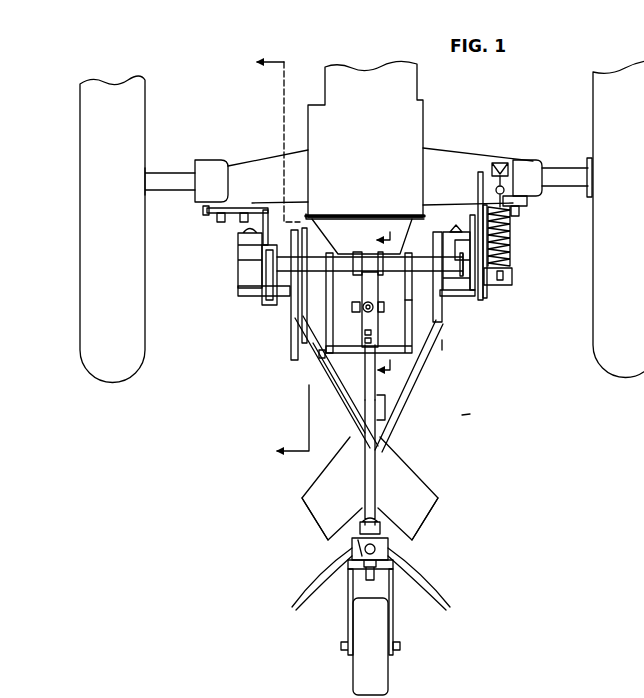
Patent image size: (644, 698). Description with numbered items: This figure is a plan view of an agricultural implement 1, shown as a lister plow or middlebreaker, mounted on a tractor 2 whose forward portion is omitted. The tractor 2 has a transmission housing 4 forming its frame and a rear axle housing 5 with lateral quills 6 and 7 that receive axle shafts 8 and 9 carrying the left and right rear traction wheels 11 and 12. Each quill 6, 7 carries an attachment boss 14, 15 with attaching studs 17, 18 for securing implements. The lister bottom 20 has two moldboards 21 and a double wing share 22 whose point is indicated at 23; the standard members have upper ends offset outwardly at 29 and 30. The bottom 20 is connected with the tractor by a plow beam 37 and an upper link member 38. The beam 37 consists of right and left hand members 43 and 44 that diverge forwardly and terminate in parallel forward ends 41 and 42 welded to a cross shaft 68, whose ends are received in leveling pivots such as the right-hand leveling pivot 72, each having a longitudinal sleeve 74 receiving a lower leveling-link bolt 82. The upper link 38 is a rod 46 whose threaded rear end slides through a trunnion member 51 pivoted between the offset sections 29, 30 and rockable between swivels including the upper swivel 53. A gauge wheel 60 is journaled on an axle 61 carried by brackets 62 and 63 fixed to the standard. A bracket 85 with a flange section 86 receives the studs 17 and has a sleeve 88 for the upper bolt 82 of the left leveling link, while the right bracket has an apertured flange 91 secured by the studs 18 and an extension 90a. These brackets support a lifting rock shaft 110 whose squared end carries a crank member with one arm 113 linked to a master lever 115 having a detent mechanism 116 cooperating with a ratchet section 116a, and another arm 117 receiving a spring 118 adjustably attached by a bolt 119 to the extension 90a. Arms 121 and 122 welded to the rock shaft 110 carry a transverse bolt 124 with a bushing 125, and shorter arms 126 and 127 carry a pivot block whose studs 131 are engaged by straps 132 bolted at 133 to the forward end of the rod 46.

The implement 1 is at (463, 415).
The tractor 2 is at (420, 92).
The transmission housing 4 is at (360, 52).
The rear axle housing 5 is at (408, 146).
The quill 6 is at (250, 166).
The quill 7 is at (448, 165).
The axle shaft 8 is at (170, 180).
The axle shaft 9 is at (562, 175).
The rear traction wheel 11 is at (128, 95).
The rear traction wheel 12 is at (600, 91).
The attachment boss 14 is at (228, 165).
The attachment boss 15 is at (514, 180).
The attaching studs 17 is at (243, 223).
The attaching studs 18 is at (518, 214).
The lister bottom 20 is at (422, 470).
The moldboards 21 is at (412, 541).
The double wing share 22 is at (327, 483).
The point 23 is at (380, 408).
The offset standard section 29 is at (386, 549).
The offset standard section 30 is at (336, 561).
The plow beam 37 is at (441, 345).
The upper link member 38 is at (378, 458).
The forward end 41 is at (438, 230).
The forward end 42 is at (312, 226).
The right hand member 43 is at (424, 352).
The left hand member 44 is at (330, 393).
The rod 46 is at (368, 385).
The trunnion member 51 is at (390, 538).
The upper swivel 53 is at (360, 570).
The gauge wheel 60 is at (378, 677).
The axle 61 is at (400, 645).
The bracket 62 is at (348, 620).
The bracket 63 is at (393, 600).
The cross shaft 68 is at (420, 226).
The leveling pivot 72 is at (458, 290).
The sleeve 74 is at (287, 300).
The bolts 82 is at (456, 228).
The bracket 85 is at (272, 205).
The flange section 86 is at (207, 210).
The sleeve 88 is at (240, 285).
The extension 90a is at (505, 160).
The apertured flange 91 is at (528, 206).
The lifting rock shaft 110 is at (340, 258).
The arm 113 is at (487, 296).
The master lever 115 is at (479, 172).
The detent mechanism 116 is at (471, 222).
The ratchet section 116a is at (462, 262).
The arm 117 is at (511, 280).
The spring 118 is at (512, 250).
The bolt 119 is at (498, 163).
The arm 121 is at (327, 316).
The arm 122 is at (408, 304).
The transverse bolt 124 is at (320, 355).
The bushing 125 is at (343, 352).
The arm 126 is at (367, 276).
The arm 127 is at (380, 275).
The studs 131 is at (372, 309).
The straps 132 is at (373, 334).
The bolt 133 is at (366, 355).